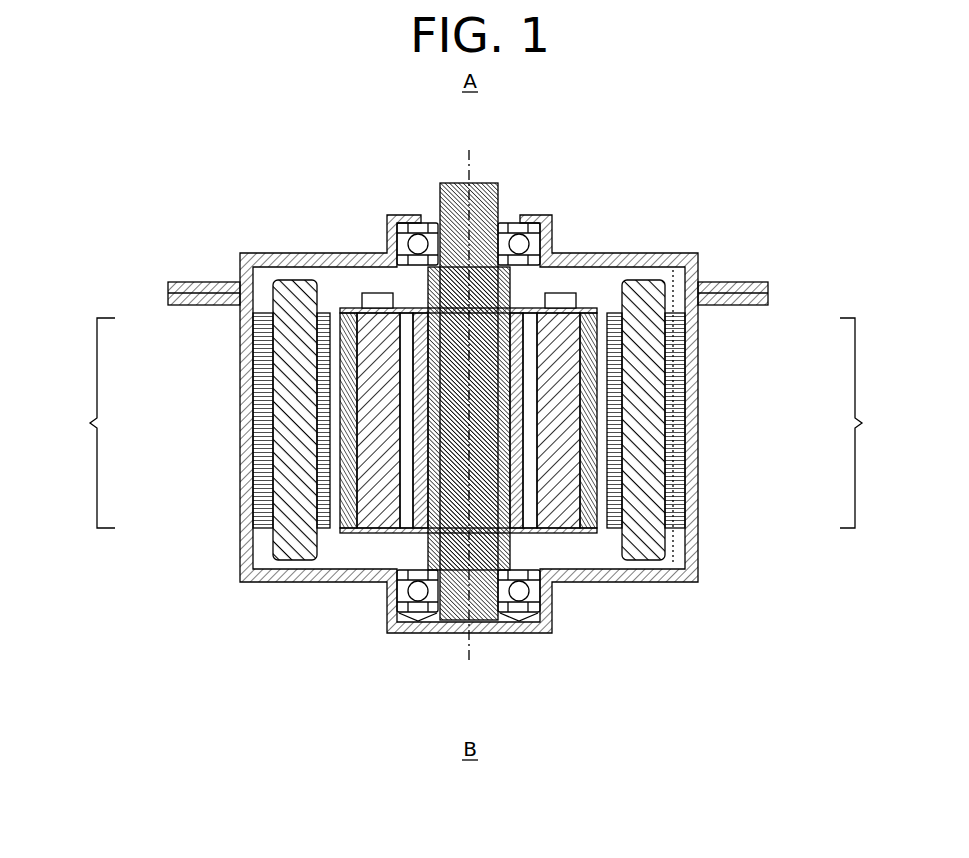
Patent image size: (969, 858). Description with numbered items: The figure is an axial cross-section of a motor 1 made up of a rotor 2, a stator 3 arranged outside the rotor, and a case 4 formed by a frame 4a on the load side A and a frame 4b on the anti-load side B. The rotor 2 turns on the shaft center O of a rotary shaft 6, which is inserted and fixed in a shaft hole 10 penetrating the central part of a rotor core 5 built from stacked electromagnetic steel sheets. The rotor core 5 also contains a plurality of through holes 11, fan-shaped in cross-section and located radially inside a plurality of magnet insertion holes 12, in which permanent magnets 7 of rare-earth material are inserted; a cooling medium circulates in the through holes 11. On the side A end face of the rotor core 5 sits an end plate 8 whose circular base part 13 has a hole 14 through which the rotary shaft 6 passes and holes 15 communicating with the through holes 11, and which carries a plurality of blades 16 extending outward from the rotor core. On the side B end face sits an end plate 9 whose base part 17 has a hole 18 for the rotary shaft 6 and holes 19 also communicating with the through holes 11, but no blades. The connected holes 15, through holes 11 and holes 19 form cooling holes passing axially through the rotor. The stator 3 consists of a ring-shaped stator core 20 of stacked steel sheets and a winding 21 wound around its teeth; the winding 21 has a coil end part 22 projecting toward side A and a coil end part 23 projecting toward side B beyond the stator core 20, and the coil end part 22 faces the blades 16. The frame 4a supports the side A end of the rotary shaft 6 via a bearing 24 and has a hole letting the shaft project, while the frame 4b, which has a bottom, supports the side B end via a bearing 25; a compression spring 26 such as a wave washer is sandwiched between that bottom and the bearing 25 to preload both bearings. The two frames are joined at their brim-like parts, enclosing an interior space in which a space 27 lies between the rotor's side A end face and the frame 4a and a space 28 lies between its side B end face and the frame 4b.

The motor 1 is at (707, 160).
The rotor 2 is at (78, 423).
The stator 3 is at (872, 423).
The case 4 is at (668, 255).
The frame 4a is at (698, 258).
The frame 4b is at (240, 583).
The rotor core 5 is at (338, 356).
The rotary shaft 6 is at (448, 433).
The permanent magnet 7 is at (345, 397).
The end plate 8 is at (275, 316).
The end plate 9 is at (275, 529).
The shaft hole 10 is at (440, 600).
The through hole 11 is at (407, 505).
The magnet insertion hole 12 is at (345, 532).
The base part 13 is at (315, 283).
The hole 14 is at (423, 300).
The hole 15 is at (397, 298).
The blade 16 is at (362, 297).
The base part 17 is at (590, 535).
The hole 18 is at (520, 533).
The hole 19 is at (563, 533).
The stator core 20 is at (690, 385).
The winding 21 is at (690, 452).
The coil end part 22 is at (673, 295).
The coil end part 23 is at (655, 560).
The bearing 24 is at (538, 233).
The bearing 25 is at (535, 615).
The compression spring 26 is at (503, 628).
The space 27 is at (588, 280).
The space 28 is at (325, 552).
The shaft center O is at (468, 178).